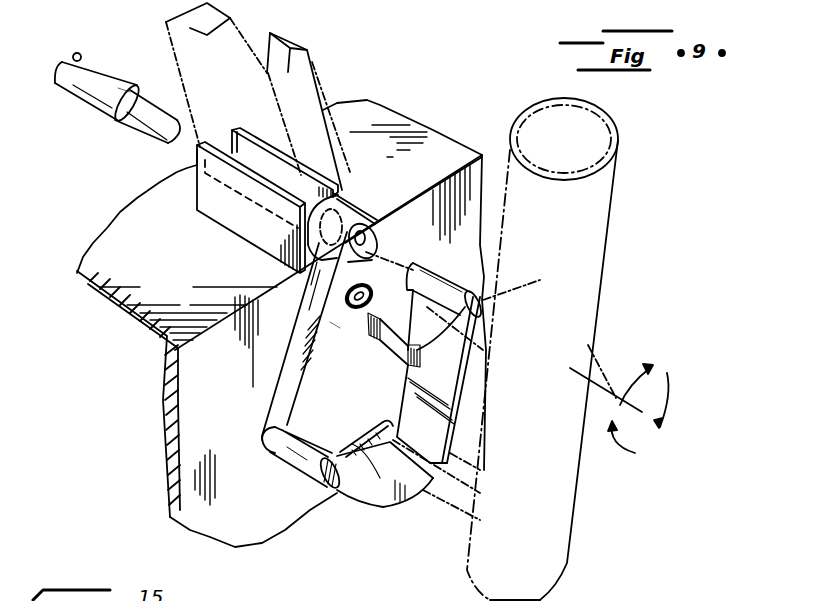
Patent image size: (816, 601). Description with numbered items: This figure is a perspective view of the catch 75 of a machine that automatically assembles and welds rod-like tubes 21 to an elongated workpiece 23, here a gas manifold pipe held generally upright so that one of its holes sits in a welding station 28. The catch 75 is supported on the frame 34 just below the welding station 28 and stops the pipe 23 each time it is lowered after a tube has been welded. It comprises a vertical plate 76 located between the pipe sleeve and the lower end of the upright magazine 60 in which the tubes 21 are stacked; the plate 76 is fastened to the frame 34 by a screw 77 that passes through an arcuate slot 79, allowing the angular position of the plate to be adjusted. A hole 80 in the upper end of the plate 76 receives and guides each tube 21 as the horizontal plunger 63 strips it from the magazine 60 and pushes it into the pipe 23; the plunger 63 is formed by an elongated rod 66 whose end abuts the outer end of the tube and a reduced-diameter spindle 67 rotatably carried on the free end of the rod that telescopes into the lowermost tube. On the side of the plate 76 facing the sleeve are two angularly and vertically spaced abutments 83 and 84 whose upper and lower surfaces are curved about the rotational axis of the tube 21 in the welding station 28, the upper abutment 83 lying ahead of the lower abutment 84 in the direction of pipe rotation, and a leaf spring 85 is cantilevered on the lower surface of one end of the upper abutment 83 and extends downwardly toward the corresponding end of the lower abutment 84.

The projecting rod-like member 21 is at (417, 555).
The elongated workpiece 23 is at (615, 147).
The welding station 28 is at (465, 200).
The frame 34 is at (145, 343).
The upright magazine 60 is at (300, 77).
The horizontal plunger 63 is at (88, 80).
The rod 66 is at (112, 87).
The spindle 67 is at (173, 140).
The catch 75 is at (297, 316).
The vertical plate 76 is at (300, 400).
The screw 77 is at (342, 328).
The arcuate slot 79 is at (372, 290).
The hole 80 is at (377, 218).
The upper abutment 83 is at (357, 490).
The lower abutment 84 is at (397, 372).
The leaf spring 85 is at (455, 432).